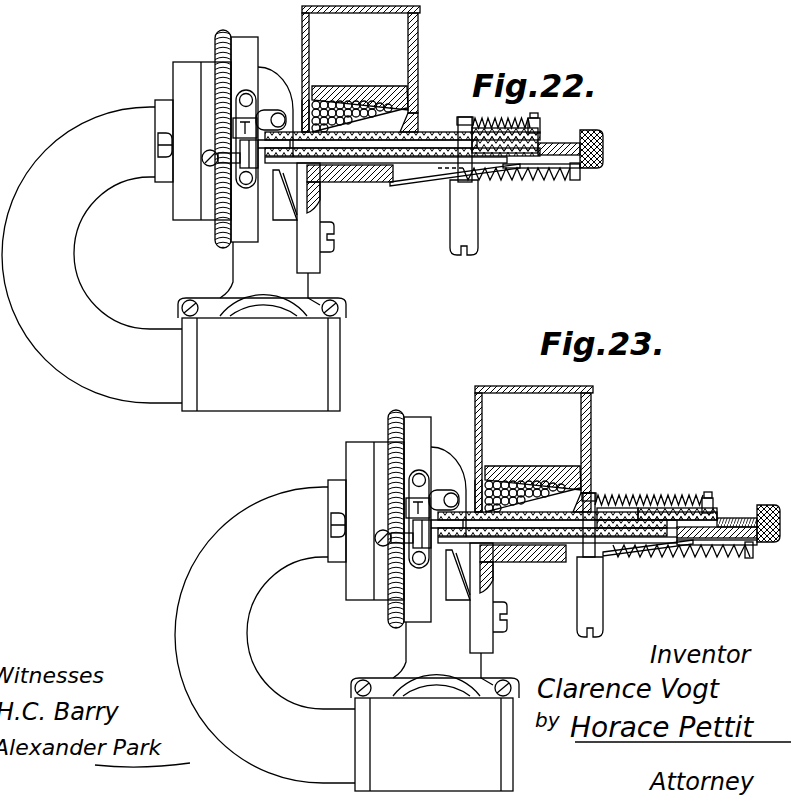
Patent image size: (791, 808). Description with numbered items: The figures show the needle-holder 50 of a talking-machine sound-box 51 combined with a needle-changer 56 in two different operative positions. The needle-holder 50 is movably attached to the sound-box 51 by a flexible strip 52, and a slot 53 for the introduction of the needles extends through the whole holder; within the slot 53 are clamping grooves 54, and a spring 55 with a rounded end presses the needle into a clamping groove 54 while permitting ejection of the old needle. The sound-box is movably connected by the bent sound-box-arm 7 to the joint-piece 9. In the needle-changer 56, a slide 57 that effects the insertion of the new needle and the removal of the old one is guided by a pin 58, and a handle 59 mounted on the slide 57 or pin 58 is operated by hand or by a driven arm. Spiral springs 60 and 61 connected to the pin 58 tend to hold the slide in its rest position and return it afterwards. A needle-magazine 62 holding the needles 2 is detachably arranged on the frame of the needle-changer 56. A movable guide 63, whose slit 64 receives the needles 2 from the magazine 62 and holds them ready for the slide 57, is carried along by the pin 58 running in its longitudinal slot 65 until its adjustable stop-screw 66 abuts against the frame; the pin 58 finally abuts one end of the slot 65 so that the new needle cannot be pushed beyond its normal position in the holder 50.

In FIG. 22, the needles 2 is at (370, 96).
In FIG. 23, the needles 2 is at (476, 482).
In FIG. 22, the bent sound-box-arm 7 is at (58, 278).
In FIG. 23, the bent sound-box-arm 7 is at (265, 635).
In FIG. 22, the joint-piece 9 is at (262, 353).
In FIG. 23, the joint-piece 9 is at (435, 733).
In FIG. 22, the needle-holder 50 is at (253, 110).
In FIG. 23, the needle-holder 50 is at (409, 492).
In FIG. 22, the sound-box 51 is at (246, 93).
In FIG. 23, the sound-box 51 is at (421, 519).
In FIG. 22, the flexible strip 52 is at (249, 55).
In FIG. 23, the flexible strip 52 is at (431, 519).
In FIG. 22, the slot 53 is at (262, 119).
In FIG. 23, the slot 53 is at (403, 523).
In FIG. 22, the grooves 54 is at (234, 126).
In FIG. 22, the spring 55 is at (246, 186).
In FIG. 23, the spring 55 is at (419, 560).
In FIG. 22, the needle-changer 56 is at (320, 199).
In FIG. 23, the needle-changer 56 is at (523, 571).
In FIG. 22, the slide 57 is at (437, 134).
In FIG. 23, the slide 57 is at (577, 550).
In FIG. 22, the pin 58 is at (466, 158).
In FIG. 23, the pin 58 is at (608, 545).
In FIG. 22, the handle 59 is at (474, 214).
In FIG. 23, the handle 59 is at (606, 597).
In FIG. 22, the spiral spring 60 is at (518, 123).
In FIG. 23, the spiral spring 60 is at (654, 491).
In FIG. 22, the spiral spring 61 is at (554, 181).
In FIG. 23, the spiral spring 61 is at (685, 552).
In FIG. 22, the needle-magazine 62 is at (406, 45).
In FIG. 23, the needle-magazine 62 is at (545, 449).
In FIG. 22, the guide 63 is at (400, 157).
In FIG. 23, the guide 63 is at (554, 564).
In FIG. 22, the slit 64 is at (300, 133).
In FIG. 23, the slit 64 is at (468, 474).
In FIG. 22, the longitudinal slot 65 is at (447, 151).
In FIG. 23, the longitudinal slot 65 is at (657, 498).
In FIG. 22, the adjustable stop-screw 66 is at (604, 139).
In FIG. 23, the adjustable stop-screw 66 is at (766, 509).